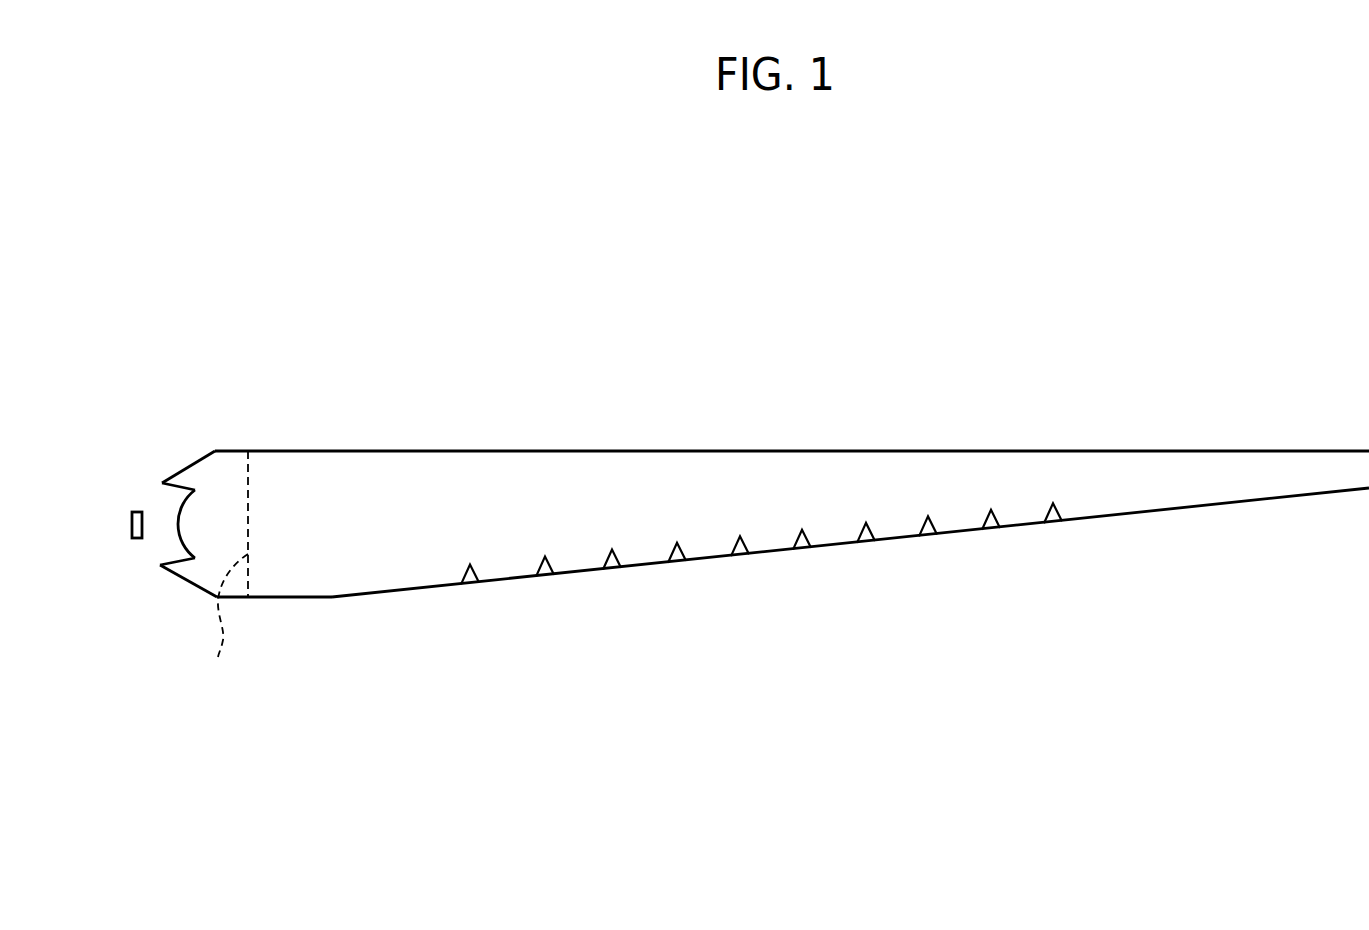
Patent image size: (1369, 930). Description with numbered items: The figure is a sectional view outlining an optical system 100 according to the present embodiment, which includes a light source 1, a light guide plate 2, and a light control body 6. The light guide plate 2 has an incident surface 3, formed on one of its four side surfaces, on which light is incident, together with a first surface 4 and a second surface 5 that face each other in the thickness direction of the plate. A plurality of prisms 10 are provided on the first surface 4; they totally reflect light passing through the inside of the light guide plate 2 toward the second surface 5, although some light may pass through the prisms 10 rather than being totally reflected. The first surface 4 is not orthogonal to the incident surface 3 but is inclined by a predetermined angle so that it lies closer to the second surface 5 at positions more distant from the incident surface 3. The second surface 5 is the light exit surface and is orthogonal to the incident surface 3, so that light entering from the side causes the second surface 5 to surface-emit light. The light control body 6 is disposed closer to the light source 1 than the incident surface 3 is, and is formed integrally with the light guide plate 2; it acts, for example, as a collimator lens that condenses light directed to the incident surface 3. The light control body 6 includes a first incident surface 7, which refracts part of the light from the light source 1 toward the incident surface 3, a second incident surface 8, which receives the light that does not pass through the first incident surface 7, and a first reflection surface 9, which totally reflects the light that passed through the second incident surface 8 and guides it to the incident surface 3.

The optical system 100 is at (597, 407).
The light source 1 is at (132, 526).
The light guide plate 2 is at (332, 598).
The incident surface 3 is at (228, 623).
The first surface 4 is at (710, 558).
The second surface 5 is at (705, 451).
The light control body 6 is at (173, 601).
The first incident surface 7 is at (170, 541).
The second incident surface 8 is at (175, 495).
The first reflection surface 9 is at (196, 458).
The prisms 10 is at (612, 567).